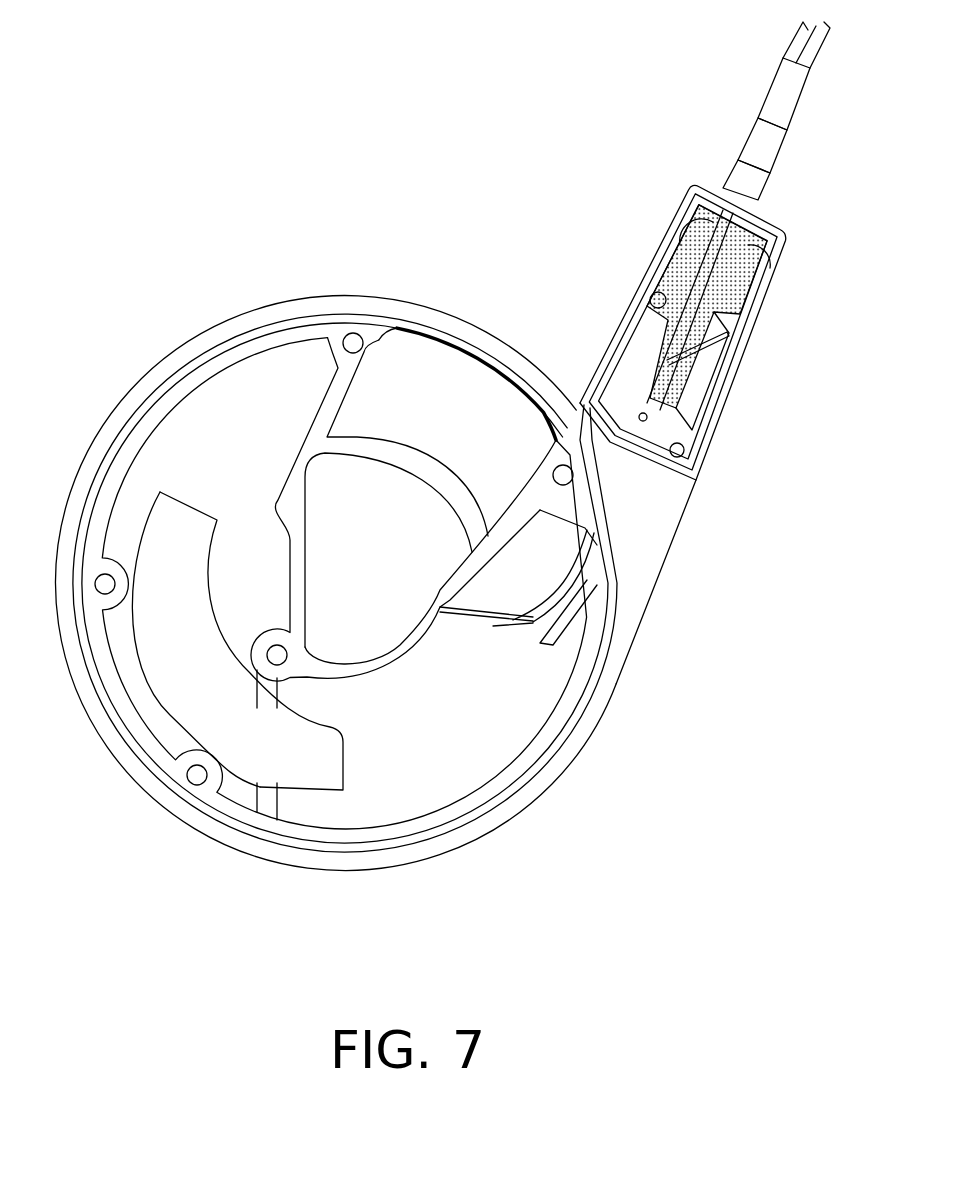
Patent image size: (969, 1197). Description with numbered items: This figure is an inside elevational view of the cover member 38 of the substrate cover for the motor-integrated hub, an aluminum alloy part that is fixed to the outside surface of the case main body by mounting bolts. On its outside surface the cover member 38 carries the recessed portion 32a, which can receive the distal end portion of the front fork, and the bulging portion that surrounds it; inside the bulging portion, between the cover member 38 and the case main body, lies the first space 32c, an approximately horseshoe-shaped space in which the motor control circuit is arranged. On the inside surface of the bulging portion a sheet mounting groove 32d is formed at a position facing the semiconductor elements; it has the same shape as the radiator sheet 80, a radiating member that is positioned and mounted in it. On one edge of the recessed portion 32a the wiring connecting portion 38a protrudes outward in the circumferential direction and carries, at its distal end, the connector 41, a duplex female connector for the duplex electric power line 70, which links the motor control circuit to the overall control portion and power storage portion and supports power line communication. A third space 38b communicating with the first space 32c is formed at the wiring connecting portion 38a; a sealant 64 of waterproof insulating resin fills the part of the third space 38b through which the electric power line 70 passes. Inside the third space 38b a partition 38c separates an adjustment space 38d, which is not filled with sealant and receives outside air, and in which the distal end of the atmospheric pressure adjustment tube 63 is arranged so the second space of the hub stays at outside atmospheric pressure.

The recessed portion 32a is at (260, 438).
The first space 32c is at (470, 739).
The sheet mounting groove 32d is at (303, 786).
The cover member 38 is at (437, 293).
The wiring connecting portion 38a is at (646, 227).
The third space 38b is at (682, 222).
The partition 38c is at (683, 394).
The adjustment space 38d is at (722, 352).
The connector 41 is at (740, 200).
The atmospheric pressure adjustment tube 63 is at (722, 340).
The sealant 64 is at (680, 257).
The electric power line 70 is at (787, 85).
The radiator sheet 80 is at (213, 713).